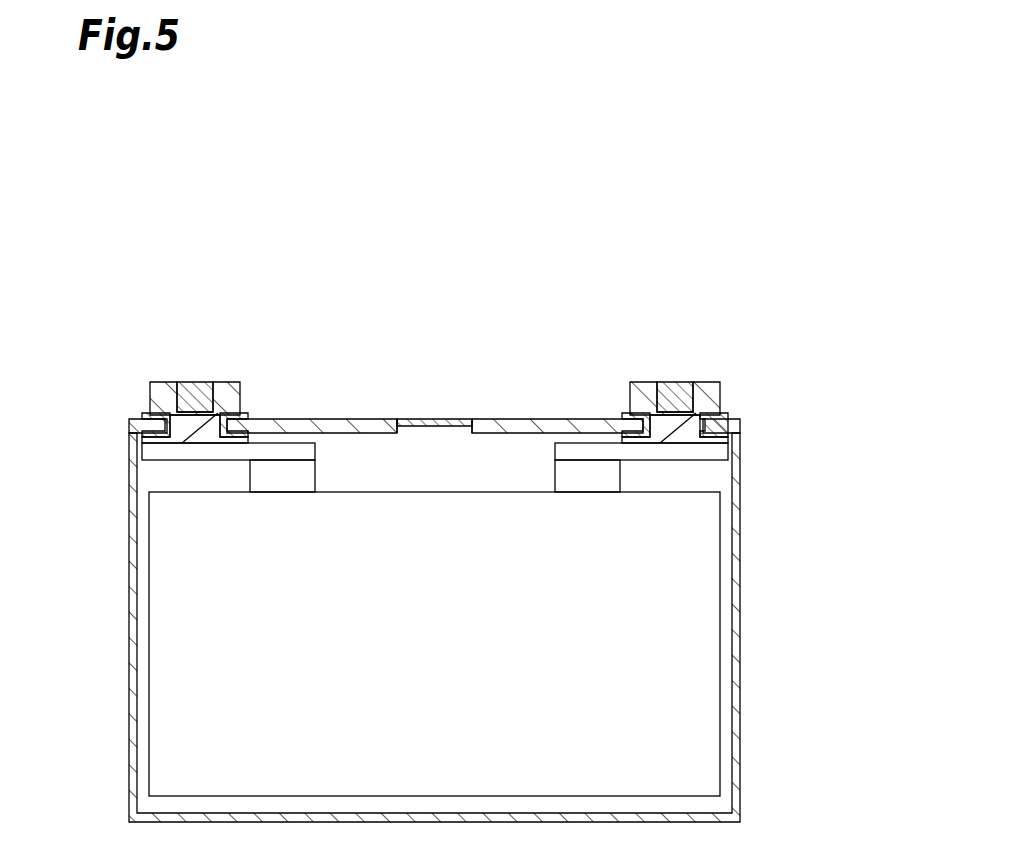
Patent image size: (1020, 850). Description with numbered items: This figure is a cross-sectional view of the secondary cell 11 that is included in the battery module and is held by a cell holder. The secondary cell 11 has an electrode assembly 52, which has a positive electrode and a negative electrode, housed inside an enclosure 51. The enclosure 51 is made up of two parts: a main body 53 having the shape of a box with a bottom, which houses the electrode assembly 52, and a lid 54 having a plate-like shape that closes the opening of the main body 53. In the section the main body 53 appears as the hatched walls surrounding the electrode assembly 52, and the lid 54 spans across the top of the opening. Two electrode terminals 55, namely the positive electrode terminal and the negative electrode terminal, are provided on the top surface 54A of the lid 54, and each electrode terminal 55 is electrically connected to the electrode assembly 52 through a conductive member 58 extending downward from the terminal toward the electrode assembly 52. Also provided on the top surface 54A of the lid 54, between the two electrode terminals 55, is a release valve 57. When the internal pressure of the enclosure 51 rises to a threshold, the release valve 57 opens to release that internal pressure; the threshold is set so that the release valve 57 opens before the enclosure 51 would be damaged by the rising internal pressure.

The secondary cell 11 is at (108, 310).
The enclosure 51 is at (803, 417).
The electrode assembly 52 is at (720, 708).
The main body 53 is at (741, 513).
The lid 54 is at (736, 424).
The top surface 54A is at (500, 419).
The electrode terminal 55 is at (215, 398).
The release valve 57 is at (437, 419).
The conductive member 58 is at (290, 455).